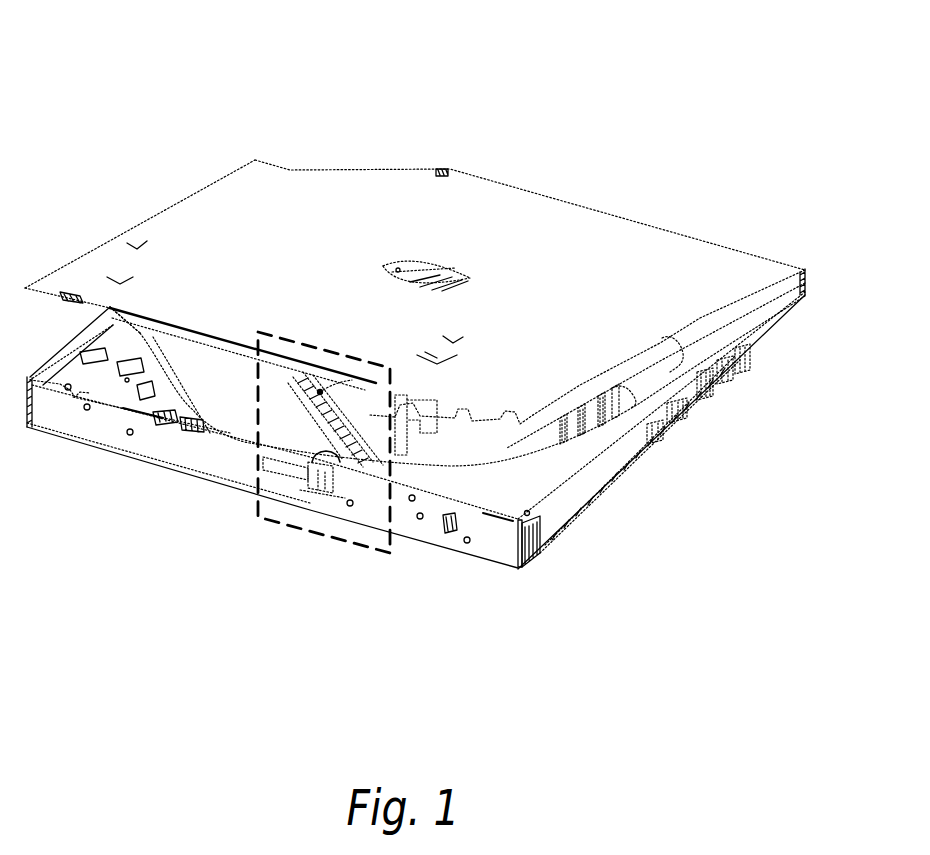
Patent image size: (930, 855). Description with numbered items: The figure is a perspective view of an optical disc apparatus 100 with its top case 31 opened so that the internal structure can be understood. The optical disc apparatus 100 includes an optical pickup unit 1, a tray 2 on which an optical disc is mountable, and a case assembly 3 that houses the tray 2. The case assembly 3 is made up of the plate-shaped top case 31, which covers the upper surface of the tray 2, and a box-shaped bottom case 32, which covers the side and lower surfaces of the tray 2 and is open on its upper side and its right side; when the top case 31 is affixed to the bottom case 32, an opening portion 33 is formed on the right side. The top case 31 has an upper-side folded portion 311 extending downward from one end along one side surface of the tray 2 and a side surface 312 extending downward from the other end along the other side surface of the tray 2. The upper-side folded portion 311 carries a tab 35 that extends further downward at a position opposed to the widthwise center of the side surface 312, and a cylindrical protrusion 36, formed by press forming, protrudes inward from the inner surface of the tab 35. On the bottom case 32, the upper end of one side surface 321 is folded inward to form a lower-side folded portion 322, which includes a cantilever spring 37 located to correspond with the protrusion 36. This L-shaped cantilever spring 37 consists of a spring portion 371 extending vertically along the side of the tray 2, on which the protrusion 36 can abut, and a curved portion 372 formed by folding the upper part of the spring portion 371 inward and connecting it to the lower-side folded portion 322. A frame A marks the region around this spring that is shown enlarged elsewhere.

The optical disc apparatus 100 is at (674, 131).
The optical pickup unit 1 is at (406, 418).
The tray 2 is at (560, 477).
The case assembly 3 is at (43, 86).
The top case 31 is at (175, 253).
The bottom case 32 is at (38, 374).
The opening portion 33 is at (685, 462).
The tab 35 is at (307, 390).
The cylindrical protrusion 36 is at (320, 392).
The cantilever spring 37 is at (360, 619).
The upper-side folded portion 311 is at (217, 340).
The side surface 312 is at (807, 278).
The side surface 321 is at (198, 467).
The lower-side folded portion 322 is at (235, 437).
The spring portion 371 is at (314, 462).
The curved portion 372 is at (340, 463).
The frame A is at (376, 557).